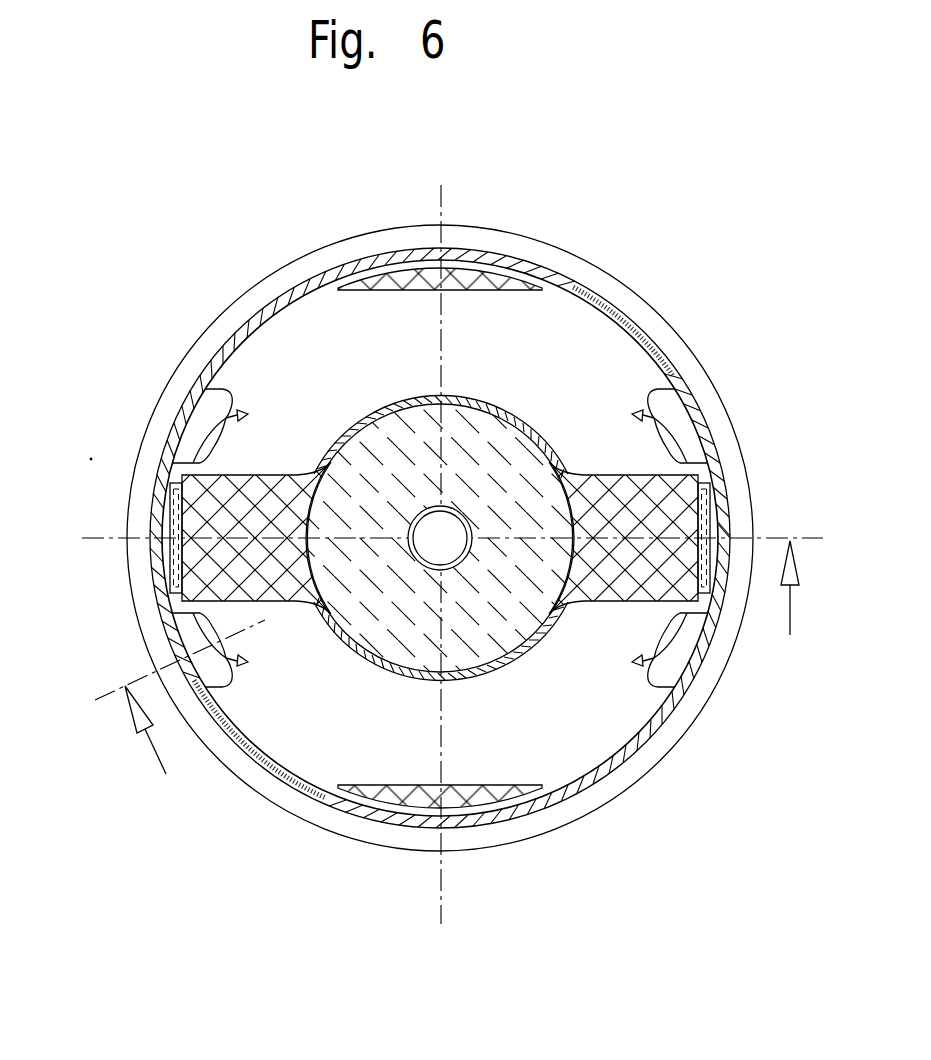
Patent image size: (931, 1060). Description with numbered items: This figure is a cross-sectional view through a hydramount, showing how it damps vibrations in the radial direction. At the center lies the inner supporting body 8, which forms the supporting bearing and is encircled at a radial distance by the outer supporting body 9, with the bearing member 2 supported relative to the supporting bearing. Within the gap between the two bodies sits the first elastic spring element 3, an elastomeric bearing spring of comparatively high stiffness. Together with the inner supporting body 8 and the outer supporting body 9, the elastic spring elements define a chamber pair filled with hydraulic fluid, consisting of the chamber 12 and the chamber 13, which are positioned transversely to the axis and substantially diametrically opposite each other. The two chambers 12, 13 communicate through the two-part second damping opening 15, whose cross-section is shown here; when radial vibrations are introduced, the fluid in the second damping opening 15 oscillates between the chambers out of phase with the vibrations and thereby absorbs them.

The bearing member 2 is at (683, 688).
The first elastic spring element 3 is at (638, 561).
The inner supporting body 8 is at (383, 462).
The outer supporting body 9 is at (178, 575).
The chamber 12 is at (538, 352).
The chamber 13 is at (575, 713).
The second damping opening 15 is at (683, 423).